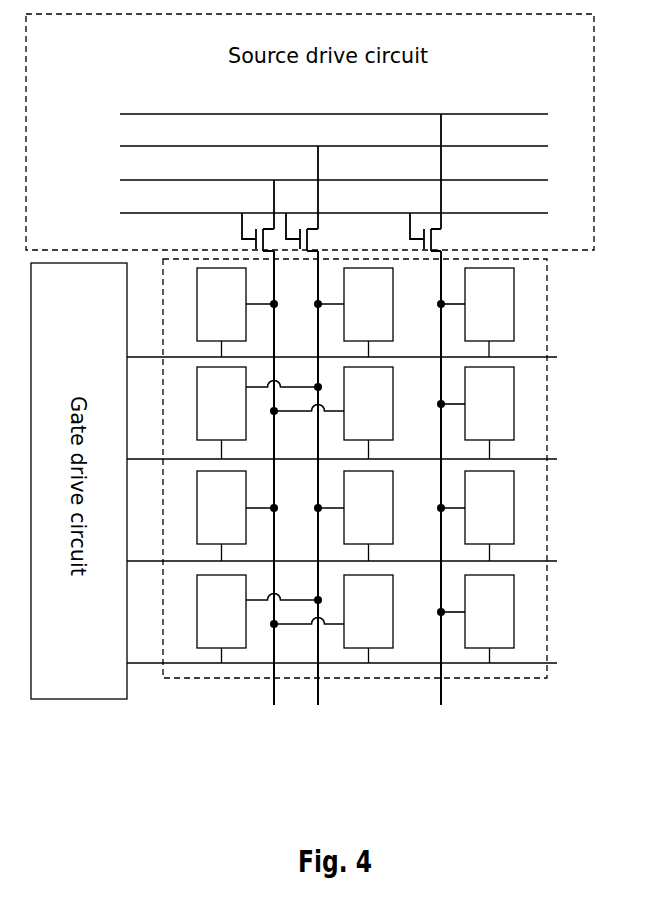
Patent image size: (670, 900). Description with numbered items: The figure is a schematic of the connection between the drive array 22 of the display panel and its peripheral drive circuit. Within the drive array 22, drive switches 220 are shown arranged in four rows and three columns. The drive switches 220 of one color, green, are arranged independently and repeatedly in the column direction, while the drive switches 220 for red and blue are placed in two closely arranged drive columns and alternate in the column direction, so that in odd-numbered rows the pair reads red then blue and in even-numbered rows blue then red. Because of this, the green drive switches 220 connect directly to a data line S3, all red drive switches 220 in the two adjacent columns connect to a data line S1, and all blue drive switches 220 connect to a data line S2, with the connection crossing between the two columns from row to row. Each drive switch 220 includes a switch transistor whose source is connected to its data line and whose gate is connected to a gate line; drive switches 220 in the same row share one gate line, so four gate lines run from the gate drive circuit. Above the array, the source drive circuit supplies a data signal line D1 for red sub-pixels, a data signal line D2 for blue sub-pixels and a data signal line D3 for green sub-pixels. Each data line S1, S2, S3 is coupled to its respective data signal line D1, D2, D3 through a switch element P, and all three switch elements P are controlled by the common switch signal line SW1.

The drive array 22 is at (398, 468).
The drive switch 220 is at (509, 330).
The switch element P is at (452, 238).
The data line S1 is at (272, 692).
The data line S2 is at (316, 692).
The data line S3 is at (439, 692).
The data signal line D1 is at (311, 198).
The data signal line D2 is at (311, 181).
The data signal line D3 is at (311, 165).
The switch signal line SW1 is at (301, 212).